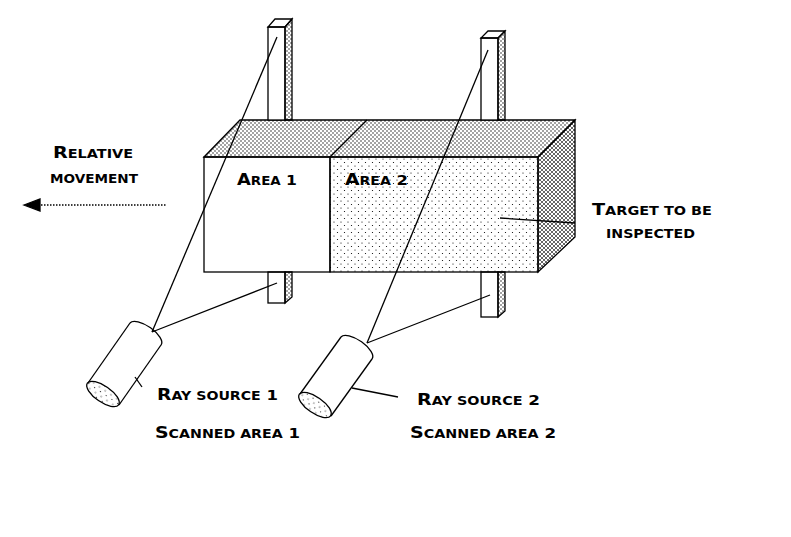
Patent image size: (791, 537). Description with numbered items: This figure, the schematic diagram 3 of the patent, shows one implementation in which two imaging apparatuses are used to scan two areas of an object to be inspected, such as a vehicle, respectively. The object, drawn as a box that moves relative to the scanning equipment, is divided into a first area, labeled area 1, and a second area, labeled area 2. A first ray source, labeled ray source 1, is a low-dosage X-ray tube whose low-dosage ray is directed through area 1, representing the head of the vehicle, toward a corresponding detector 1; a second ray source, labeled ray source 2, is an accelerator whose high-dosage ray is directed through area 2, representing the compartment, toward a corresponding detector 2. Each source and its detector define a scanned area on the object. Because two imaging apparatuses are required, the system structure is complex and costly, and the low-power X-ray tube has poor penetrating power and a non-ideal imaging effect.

The detector 1 is at (278, 72).
The detector 2 is at (492, 84).
The figure caption 3 is at (420, 503).